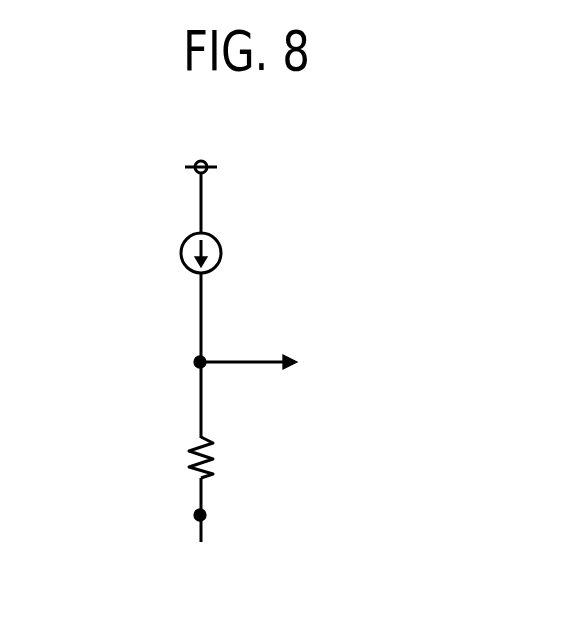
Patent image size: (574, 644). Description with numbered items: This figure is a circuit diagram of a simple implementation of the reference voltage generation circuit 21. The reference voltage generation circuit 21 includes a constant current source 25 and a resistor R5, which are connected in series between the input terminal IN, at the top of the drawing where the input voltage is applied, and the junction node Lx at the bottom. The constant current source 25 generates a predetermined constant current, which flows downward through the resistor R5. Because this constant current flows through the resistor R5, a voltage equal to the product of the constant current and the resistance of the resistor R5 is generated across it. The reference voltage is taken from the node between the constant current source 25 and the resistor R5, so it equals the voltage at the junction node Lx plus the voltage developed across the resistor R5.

The reference voltage generation circuit 21 is at (310, 194).
The constant current source 25 is at (181, 253).
The input terminal IN is at (203, 174).
The resistor R5 is at (220, 457).
The junction node Lx is at (207, 515).